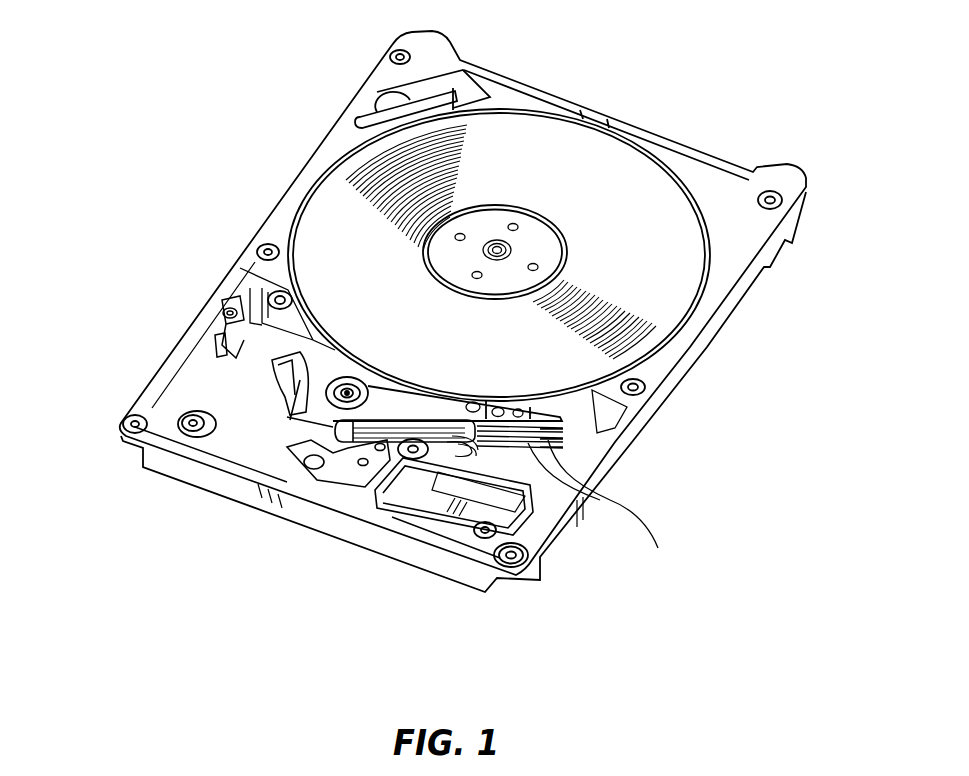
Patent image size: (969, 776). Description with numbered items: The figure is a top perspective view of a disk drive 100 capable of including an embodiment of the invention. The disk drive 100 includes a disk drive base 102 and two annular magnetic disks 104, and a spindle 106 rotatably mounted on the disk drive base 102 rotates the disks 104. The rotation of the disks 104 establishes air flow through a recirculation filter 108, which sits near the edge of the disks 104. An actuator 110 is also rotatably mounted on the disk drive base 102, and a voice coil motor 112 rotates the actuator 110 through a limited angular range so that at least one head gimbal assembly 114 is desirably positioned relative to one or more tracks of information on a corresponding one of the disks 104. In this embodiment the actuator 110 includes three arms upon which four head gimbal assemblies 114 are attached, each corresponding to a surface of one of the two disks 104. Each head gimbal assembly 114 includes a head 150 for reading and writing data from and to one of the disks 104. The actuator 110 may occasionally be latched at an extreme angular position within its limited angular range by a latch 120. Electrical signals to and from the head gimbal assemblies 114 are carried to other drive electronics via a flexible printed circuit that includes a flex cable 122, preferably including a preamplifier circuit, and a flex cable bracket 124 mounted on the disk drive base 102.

The disk drive 100 is at (672, 67).
The disk drive base 102 is at (737, 177).
The annular magnetic disks 104 is at (366, 278).
The spindle 106 is at (540, 240).
The recirculation filter 108 is at (377, 93).
The actuator 110 is at (383, 387).
The voice coil motor 112 is at (228, 393).
The head gimbal assembly 114 is at (533, 410).
The latch 120 is at (236, 358).
The flex cable 122 is at (432, 418).
The flex cable bracket 124 is at (413, 493).
The head 150 is at (600, 500).